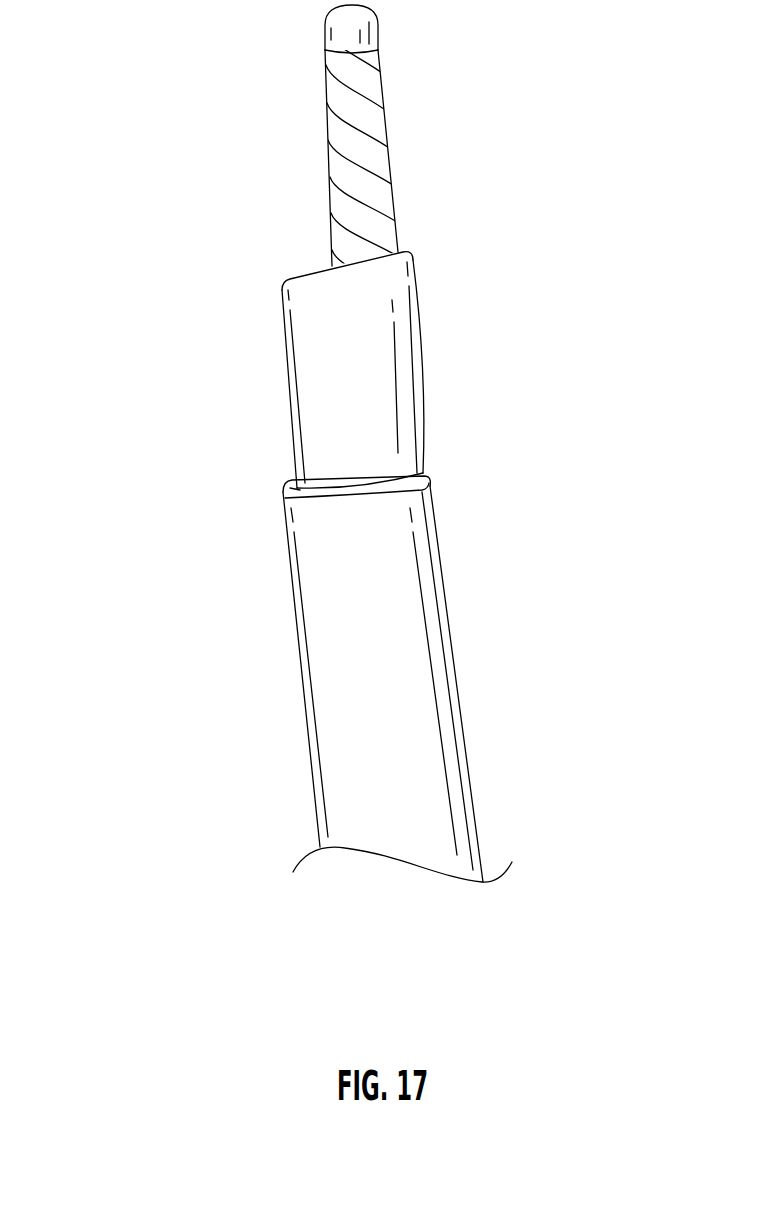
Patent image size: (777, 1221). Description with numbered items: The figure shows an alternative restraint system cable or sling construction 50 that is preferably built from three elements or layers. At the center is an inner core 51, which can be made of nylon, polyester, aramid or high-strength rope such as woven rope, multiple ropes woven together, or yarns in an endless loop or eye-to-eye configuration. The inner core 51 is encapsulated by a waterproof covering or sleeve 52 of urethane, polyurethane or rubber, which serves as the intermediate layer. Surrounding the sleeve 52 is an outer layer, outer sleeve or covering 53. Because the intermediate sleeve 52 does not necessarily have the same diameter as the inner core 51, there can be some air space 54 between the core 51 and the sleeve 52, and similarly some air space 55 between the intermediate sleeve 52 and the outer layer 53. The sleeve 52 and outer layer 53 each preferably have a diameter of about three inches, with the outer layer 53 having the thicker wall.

The restraint system cable or sling construction 50 is at (177, 658).
The inner core 51 is at (440, 190).
The intermediate sleeve 52 is at (478, 378).
The outer layer 53 is at (420, 838).
The air space 54 is at (306, 262).
The air space 55 is at (285, 475).